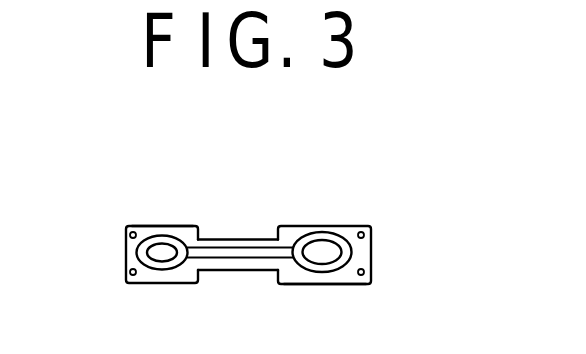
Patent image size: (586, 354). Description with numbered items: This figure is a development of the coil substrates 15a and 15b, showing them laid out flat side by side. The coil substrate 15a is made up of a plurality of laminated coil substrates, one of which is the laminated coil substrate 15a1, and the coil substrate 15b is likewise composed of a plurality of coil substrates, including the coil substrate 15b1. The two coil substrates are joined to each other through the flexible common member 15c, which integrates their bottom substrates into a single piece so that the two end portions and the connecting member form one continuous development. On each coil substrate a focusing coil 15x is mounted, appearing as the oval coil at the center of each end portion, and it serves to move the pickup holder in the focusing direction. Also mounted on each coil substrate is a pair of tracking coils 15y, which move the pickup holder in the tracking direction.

The coil substrate 15a is at (392, 256).
The laminated coil substrate 15a1 is at (310, 284).
The coil substrate 15b is at (99, 262).
The coil substrate 15b1 is at (189, 208).
The flexible common member 15c is at (232, 271).
The focusing coil 15x is at (323, 232).
The tracking coils 15y is at (126, 229).